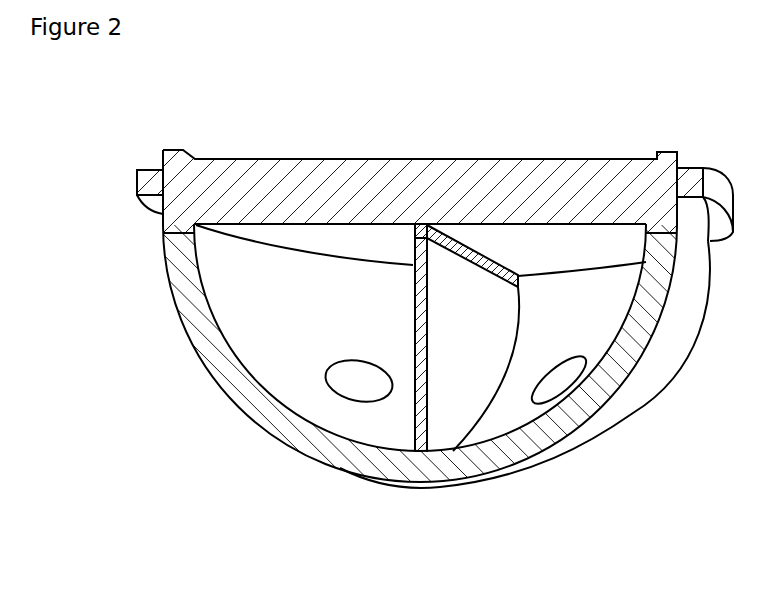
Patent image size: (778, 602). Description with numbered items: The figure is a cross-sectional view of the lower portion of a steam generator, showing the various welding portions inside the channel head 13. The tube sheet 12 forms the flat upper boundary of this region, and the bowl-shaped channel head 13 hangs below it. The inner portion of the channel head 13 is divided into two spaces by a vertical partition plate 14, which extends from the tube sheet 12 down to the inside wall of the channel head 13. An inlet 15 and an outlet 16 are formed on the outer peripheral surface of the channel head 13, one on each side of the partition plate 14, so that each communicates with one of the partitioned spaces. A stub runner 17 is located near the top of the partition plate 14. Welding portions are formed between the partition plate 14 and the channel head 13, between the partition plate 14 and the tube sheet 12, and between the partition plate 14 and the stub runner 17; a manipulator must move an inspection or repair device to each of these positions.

The tube sheet 12 is at (548, 178).
The channel head 13 is at (663, 348).
The partition plate 14 is at (440, 412).
The inlet 15 is at (340, 377).
The outlet 16 is at (548, 387).
The stub runner 17 is at (440, 228).